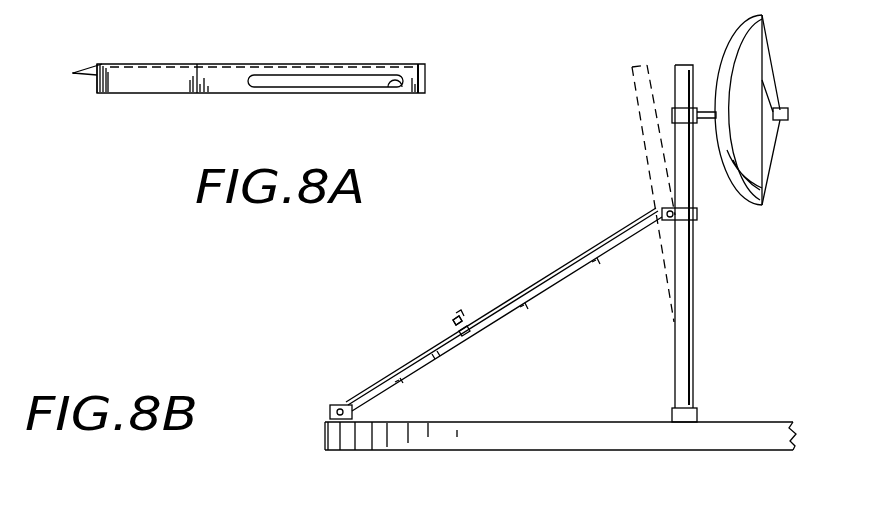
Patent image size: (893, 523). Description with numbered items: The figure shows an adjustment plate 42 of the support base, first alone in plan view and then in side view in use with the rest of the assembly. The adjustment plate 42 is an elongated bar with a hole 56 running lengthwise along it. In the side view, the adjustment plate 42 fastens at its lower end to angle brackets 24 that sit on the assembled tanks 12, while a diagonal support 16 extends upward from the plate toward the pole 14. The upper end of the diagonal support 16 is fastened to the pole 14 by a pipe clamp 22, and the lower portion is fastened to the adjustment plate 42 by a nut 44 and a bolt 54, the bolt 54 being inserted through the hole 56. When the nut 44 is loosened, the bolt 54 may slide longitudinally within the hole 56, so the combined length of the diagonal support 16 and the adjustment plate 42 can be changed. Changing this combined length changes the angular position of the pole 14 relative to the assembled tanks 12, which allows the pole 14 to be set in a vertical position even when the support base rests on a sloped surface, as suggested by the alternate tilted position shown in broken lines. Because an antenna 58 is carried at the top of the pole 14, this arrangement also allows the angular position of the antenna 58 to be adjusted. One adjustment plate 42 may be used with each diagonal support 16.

In FIG. 8B, the assembled tanks 12 is at (548, 420).
In FIG. 8B, the pole 14 is at (693, 317).
In FIG. 8B, the diagonal support 16 is at (563, 272).
In FIG. 8B, the pipe clamp 22 is at (697, 214).
In FIG. 8B, the angle brackets 24 is at (337, 408).
In FIG. 8A, the adjustment plate 42 is at (138, 93).
In FIG. 8B, the adjustment plate 42 is at (382, 377).
In FIG. 8B, the nut 44 is at (457, 320).
In FIG. 8B, the bolt 54 is at (457, 320).
In FIG. 8A, the hole 56 is at (403, 88).
In FIG. 8B, the antenna 58 is at (732, 43).